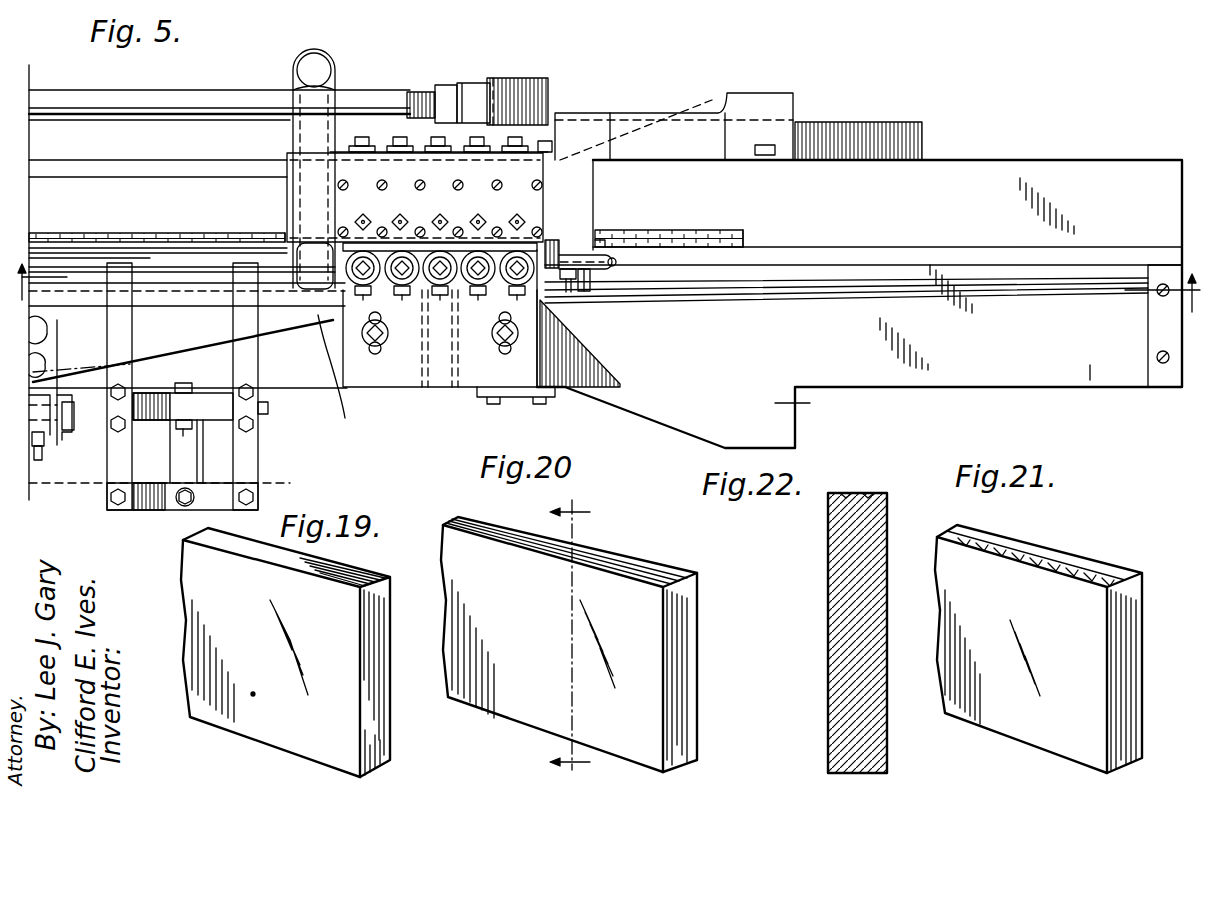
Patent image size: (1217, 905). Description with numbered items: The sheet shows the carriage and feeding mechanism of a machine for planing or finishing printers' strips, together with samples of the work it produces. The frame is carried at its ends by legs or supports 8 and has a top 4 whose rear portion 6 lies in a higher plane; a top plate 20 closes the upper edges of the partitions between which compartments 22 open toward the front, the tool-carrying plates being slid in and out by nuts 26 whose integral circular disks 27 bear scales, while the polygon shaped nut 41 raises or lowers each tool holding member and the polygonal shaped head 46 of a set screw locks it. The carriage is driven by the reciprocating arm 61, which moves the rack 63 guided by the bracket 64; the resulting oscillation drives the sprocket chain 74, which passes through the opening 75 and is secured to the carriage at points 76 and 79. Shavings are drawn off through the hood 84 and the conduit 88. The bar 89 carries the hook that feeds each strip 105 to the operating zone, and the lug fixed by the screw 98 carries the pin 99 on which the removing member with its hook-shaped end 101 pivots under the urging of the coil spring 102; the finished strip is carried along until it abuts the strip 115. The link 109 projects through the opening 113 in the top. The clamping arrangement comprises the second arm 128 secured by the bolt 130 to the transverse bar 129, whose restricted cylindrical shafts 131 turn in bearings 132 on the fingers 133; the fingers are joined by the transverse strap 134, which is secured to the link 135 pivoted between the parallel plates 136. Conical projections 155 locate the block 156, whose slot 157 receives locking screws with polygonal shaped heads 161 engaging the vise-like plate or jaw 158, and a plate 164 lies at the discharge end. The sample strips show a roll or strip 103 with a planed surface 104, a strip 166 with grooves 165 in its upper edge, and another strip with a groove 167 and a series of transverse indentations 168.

In FIG. 5, the top 4 is at (940, 368).
In FIG. 5, the rear portion of the top 6 is at (985, 180).
In FIG. 5, the legs or supports 8 is at (716, 73).
In FIG. 5, the top plate 20 is at (530, 198).
In FIG. 20, the compartments 22 is at (574, 635).
In FIG. 5, the nuts 26 is at (400, 137).
In FIG. 5, the circular disks 27 is at (470, 140).
In FIG. 5, the polygon shaped nut 41 is at (503, 297).
In FIG. 5, the polygonal shaped head 46 is at (443, 306).
In FIG. 5, the arm 61 is at (144, 98).
In FIG. 5, the rack 63 is at (845, 137).
In FIG. 5, the bracket 64 is at (740, 137).
In FIG. 5, the sprocket chain 74 is at (118, 238).
In FIG. 5, the opening 75 is at (722, 233).
In FIG. 5, the chain securing point 76 is at (600, 240).
In FIG. 5, the chain securing point 79 is at (282, 235).
In FIG. 5, the hood 84 is at (312, 266).
In FIG. 5, the conduit 88 is at (318, 68).
In FIG. 5, the bar 89 is at (67, 256).
In FIG. 5, the screw 98 is at (565, 282).
In FIG. 5, the pin 99 is at (618, 263).
In FIG. 5, the hook-shaped end 101 is at (280, 300).
In FIG. 5, the coil spring 102 is at (558, 240).
In FIG. 19, the roll or strip 103 is at (340, 706).
In FIG. 19, the planed surface 104 is at (352, 578).
In FIG. 5, the strips 105 is at (180, 266).
In FIG. 5, the link 109 is at (590, 283).
In FIG. 5, the opening 113 is at (588, 272).
In FIG. 5, the strip 115 is at (1150, 334).
In FIG. 5, the second arm 128 is at (200, 373).
In FIG. 5, the transverse bar 129 is at (213, 415).
In FIG. 5, the bolt 130 is at (183, 433).
In FIG. 5, the restricted cylindrical shafts 131 is at (268, 412).
In FIG. 5, the bearings 132 is at (125, 403).
In FIG. 5, the fingers 133 is at (240, 320).
In FIG. 5, the transverse strap 134 is at (167, 503).
In FIG. 5, the link 135 is at (260, 487).
In FIG. 5, the parallel plates 136 is at (203, 470).
In FIG. 5, the conical projection 155 is at (50, 438).
In FIG. 5, the block 156 is at (48, 458).
In FIG. 5, the slot 157 is at (42, 372).
In FIG. 5, the vise-like plate or jaw 158 is at (349, 375).
In FIG. 5, the polygonal shaped heads 161 is at (44, 320).
In FIG. 5, the plate 164 is at (412, 378).
In FIG. 20, the grooves 165 is at (663, 566).
In FIG. 22, the grooves 165 is at (866, 492).
In FIG. 20, the strip 166 is at (658, 668).
In FIG. 22, the strip 166 is at (888, 527).
In FIG. 21, the groove 167 is at (1050, 560).
In FIG. 21, the transverse indentations 168 is at (1025, 556).